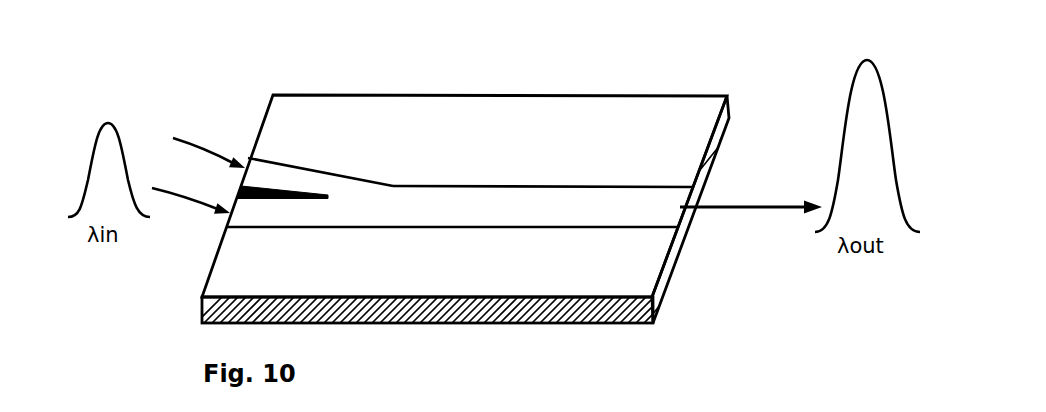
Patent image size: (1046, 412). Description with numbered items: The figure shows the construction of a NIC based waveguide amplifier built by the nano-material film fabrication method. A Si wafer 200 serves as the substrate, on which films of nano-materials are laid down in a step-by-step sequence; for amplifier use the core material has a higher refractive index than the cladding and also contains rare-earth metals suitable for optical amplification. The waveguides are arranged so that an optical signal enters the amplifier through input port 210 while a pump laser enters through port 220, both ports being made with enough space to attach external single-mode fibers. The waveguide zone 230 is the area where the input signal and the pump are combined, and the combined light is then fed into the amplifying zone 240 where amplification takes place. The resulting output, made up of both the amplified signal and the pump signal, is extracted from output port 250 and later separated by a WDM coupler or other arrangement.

The Si wafer 200 is at (614, 315).
The input port 210 is at (189, 187).
The port 220 is at (202, 139).
The waveguide zone 230 is at (363, 196).
The amplifying zone 240 is at (518, 202).
The output port 250 is at (678, 200).